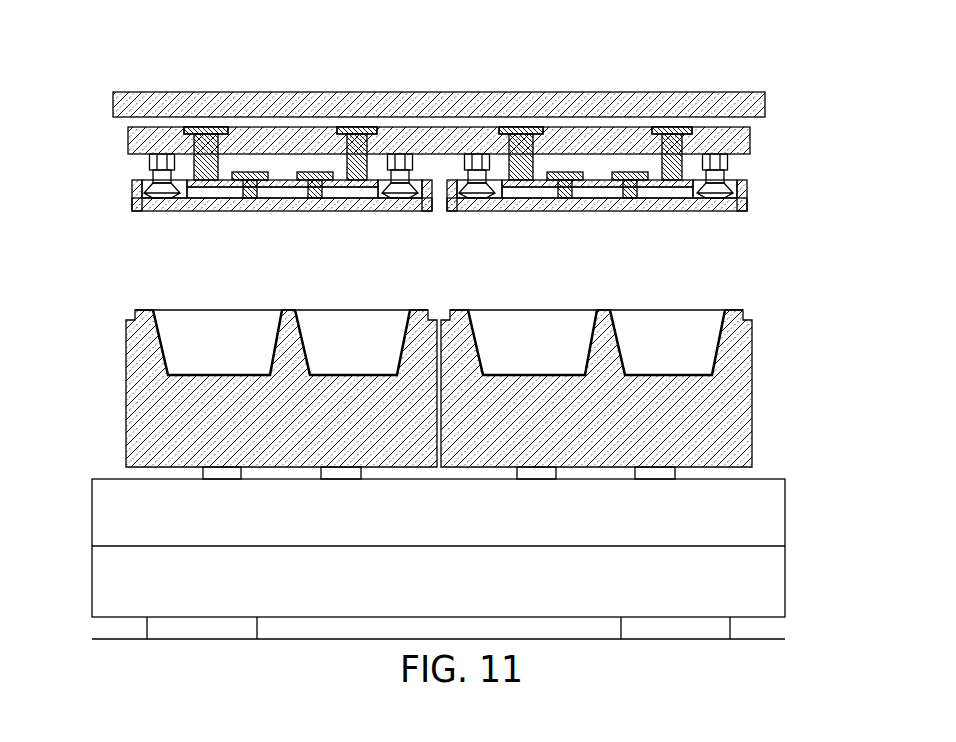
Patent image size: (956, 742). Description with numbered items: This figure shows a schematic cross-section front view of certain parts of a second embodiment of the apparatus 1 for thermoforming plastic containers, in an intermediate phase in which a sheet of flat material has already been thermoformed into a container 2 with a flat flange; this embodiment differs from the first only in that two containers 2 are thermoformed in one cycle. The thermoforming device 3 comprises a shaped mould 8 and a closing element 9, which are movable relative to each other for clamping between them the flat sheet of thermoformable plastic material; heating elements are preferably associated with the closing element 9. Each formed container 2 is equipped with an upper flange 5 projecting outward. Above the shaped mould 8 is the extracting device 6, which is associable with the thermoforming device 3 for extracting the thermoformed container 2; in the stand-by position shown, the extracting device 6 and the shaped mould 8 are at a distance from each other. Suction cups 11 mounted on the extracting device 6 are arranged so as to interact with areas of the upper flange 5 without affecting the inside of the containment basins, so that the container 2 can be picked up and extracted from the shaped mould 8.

The apparatus 1 is at (773, 205).
The container 2 is at (423, 277).
The thermoforming device 3 is at (113, 350).
The upper flange 5 is at (458, 300).
The extracting device 6 is at (108, 203).
The shaped mould 8 is at (162, 420).
The closing element 9 is at (701, 102).
The suction cups 11 is at (162, 207).